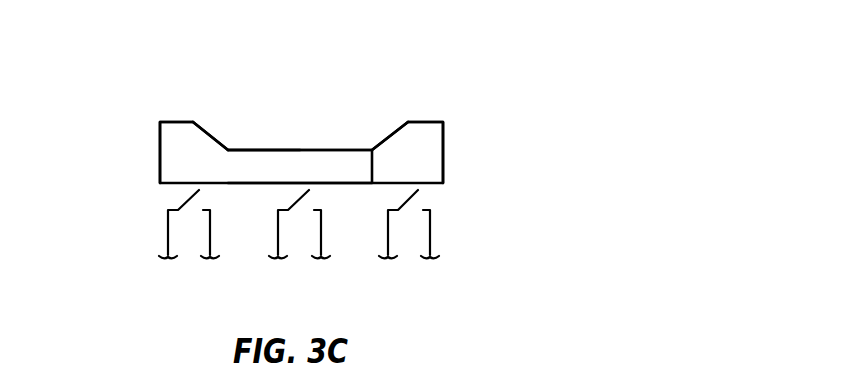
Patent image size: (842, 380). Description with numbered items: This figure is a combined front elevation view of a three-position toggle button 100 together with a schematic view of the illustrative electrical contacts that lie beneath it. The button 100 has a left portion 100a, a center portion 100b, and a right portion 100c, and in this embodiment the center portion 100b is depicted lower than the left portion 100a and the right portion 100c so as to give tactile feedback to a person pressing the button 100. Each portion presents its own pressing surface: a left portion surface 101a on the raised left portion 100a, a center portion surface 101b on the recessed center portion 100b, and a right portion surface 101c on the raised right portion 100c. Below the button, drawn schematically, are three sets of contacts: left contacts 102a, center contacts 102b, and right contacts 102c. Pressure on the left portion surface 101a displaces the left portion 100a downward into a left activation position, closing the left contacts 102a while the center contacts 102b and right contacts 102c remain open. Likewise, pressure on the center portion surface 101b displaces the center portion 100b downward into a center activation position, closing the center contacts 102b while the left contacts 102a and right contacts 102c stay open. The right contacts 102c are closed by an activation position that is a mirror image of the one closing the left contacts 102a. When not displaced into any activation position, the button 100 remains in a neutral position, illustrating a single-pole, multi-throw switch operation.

The three-position toggle button 100 is at (520, 58).
The left portion 100a is at (173, 128).
The center portion 100b is at (316, 158).
The right portion 100c is at (428, 128).
The left portion surface 101a is at (211, 134).
The center portion surface 101b is at (255, 148).
The right portion surface 101c is at (390, 134).
The left contacts 102a is at (156, 243).
The center contacts 102b is at (265, 243).
The right contacts 102c is at (375, 243).